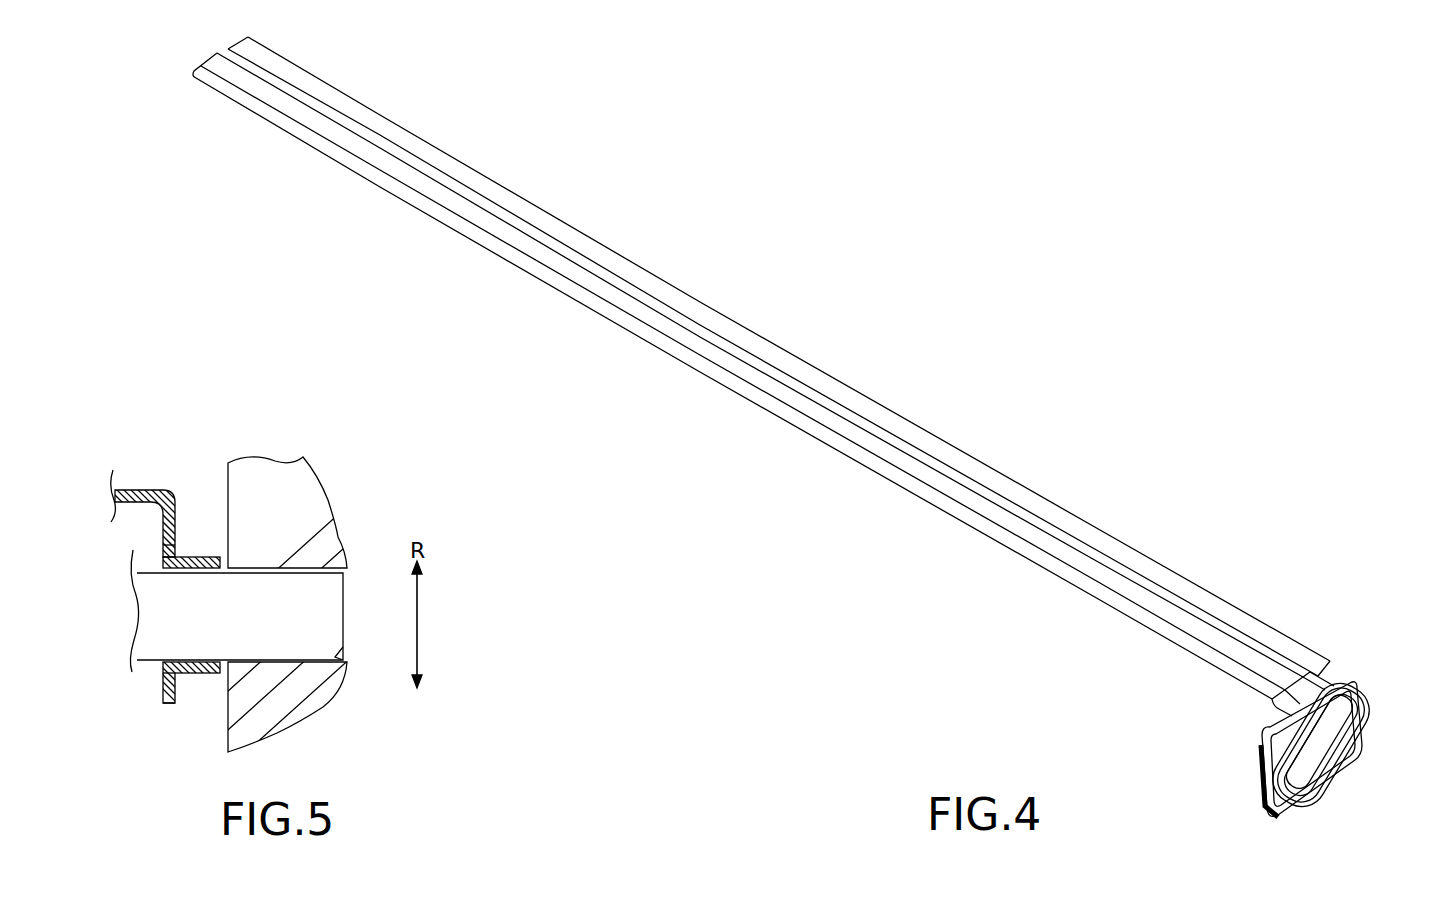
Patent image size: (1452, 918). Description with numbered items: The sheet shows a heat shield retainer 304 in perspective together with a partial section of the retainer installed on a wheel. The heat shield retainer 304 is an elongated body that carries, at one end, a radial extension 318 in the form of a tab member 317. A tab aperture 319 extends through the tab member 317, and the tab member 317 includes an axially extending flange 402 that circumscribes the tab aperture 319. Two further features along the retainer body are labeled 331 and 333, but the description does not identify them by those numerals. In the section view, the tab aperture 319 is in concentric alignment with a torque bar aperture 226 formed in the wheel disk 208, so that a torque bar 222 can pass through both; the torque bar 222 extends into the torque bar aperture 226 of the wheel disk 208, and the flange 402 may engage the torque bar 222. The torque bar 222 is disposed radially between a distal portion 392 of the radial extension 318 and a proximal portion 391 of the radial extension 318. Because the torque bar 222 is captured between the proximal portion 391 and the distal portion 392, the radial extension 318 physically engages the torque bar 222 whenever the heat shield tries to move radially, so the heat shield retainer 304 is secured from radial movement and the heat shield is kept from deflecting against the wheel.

In FIG. 4, the heat shield retainer 304 is at (763, 376).
In FIG. 5, the heat shield retainer 304 is at (128, 493).
In FIG. 4, the upper rail of conduit 333 is at (1206, 591).
In FIG. 4, the lower tube body of conduit 331 is at (1172, 633).
In FIG. 4, the tab member 317 is at (1257, 750).
In FIG. 4, the radial extension 318 is at (1257, 788).
In FIG. 5, the radial extension 318 is at (163, 703).
In FIG. 4, the axially extending flange 402 is at (1362, 732).
In FIG. 5, the axially extending flange 402 is at (192, 674).
In FIG. 4, the tab aperture 319 is at (1330, 782).
In FIG. 5, the tab aperture 319 is at (190, 556).
In FIG. 5, the wheel disk 208 is at (270, 480).
In FIG. 5, the torque bar 222 is at (224, 628).
In FIG. 5, the torque bar aperture 226 is at (335, 657).
In FIG. 5, the proximal portion 391 is at (165, 560).
In FIG. 5, the distal portion 392 is at (163, 674).